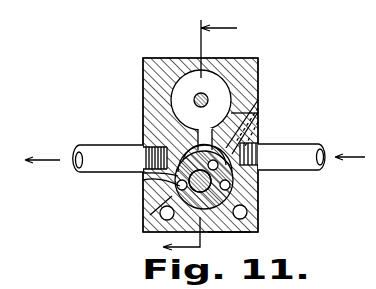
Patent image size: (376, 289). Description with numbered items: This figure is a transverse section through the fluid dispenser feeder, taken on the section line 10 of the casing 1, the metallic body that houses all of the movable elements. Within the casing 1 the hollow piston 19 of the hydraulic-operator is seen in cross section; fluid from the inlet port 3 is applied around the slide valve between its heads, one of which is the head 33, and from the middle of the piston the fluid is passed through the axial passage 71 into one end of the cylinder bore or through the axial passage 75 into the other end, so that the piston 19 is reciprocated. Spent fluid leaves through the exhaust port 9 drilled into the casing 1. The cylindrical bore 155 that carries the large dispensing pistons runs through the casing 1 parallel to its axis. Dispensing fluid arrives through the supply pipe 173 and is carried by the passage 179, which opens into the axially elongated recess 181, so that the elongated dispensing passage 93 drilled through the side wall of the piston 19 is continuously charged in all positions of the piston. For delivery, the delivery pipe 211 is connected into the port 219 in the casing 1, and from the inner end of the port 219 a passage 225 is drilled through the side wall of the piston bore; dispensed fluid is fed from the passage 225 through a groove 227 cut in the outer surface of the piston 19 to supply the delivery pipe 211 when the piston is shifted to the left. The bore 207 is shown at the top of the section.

The casing 1 is at (157, 66).
The inlet port 3 is at (150, 232).
The exhaust port 9 is at (258, 208).
The section line 10 is at (214, 133).
The hollow piston 19 is at (236, 237).
The head 33 is at (176, 183).
The axial passage 71 is at (158, 200).
The axial passage 75 is at (258, 190).
The passage 93 is at (259, 100).
The cylindrical bore 155 is at (218, 63).
The supply pipe 173 is at (296, 150).
The passage 179 is at (259, 108).
The recess 181 is at (259, 124).
The bore 207 is at (186, 131).
The delivery pipe 211 is at (88, 154).
The port 219 is at (150, 148).
The passage 225 is at (152, 176).
The groove 227 is at (168, 122).